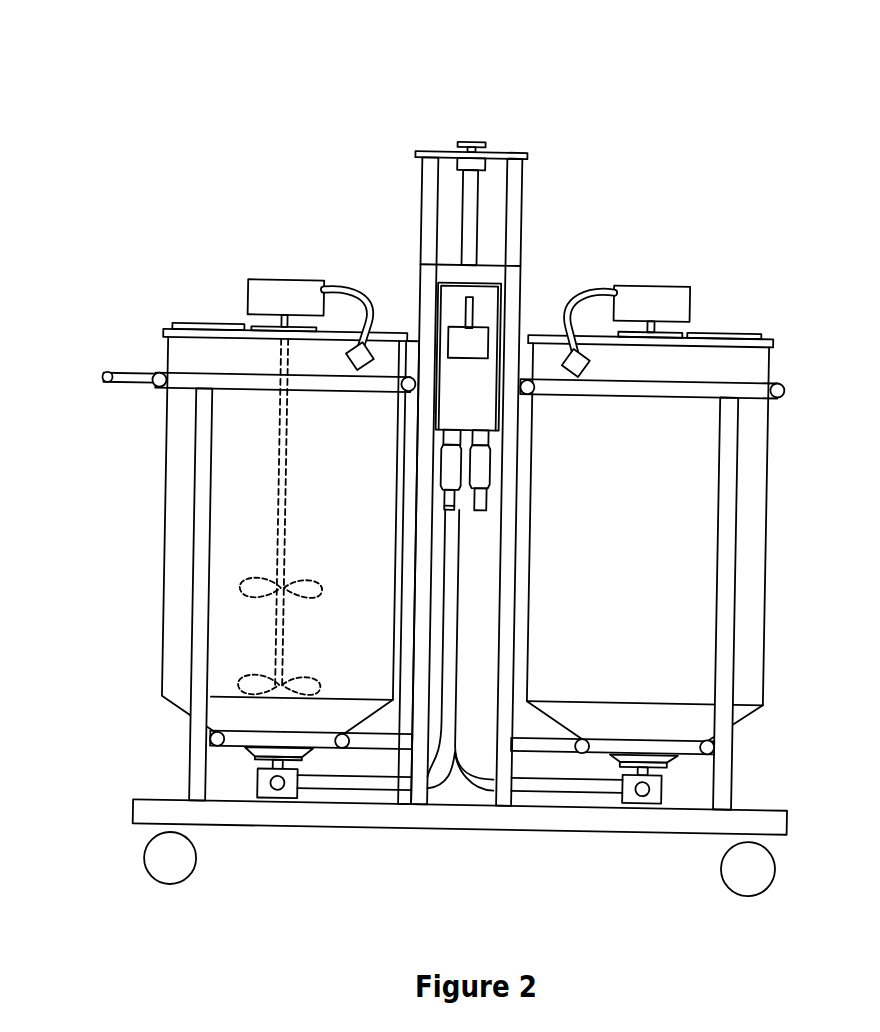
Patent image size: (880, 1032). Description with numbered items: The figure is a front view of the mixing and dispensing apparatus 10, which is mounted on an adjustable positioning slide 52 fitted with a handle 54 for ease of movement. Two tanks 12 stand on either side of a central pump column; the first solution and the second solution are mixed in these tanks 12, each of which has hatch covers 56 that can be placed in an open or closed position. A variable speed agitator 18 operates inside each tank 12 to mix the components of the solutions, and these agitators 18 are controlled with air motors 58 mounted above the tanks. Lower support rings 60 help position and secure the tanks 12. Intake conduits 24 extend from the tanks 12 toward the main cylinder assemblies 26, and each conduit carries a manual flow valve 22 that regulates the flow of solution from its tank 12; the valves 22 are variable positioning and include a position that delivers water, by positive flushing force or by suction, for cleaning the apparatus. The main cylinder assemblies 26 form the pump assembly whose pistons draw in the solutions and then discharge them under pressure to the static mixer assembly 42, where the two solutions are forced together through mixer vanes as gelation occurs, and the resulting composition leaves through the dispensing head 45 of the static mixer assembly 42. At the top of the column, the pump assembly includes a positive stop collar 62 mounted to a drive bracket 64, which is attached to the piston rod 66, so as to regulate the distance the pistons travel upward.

The apparatus 10 is at (624, 67).
The tank 12 is at (164, 587).
The variable speed agitator 18 is at (270, 494).
The manual flow valve 22 is at (262, 780).
The intake conduit 24 is at (355, 786).
The main cylinder assembly 26 is at (488, 293).
The static mixer assembly 42 is at (466, 338).
The dispensing head 45 is at (460, 300).
The adjustable positioning slide 52 is at (778, 824).
The handle 54 is at (120, 378).
The hatch cover 56 is at (208, 328).
The air motor 58 is at (280, 283).
The support bar 60 is at (213, 742).
The positive stop collar 62 is at (470, 163).
The drive bracket 64 is at (440, 153).
The piston rod 66 is at (471, 222).